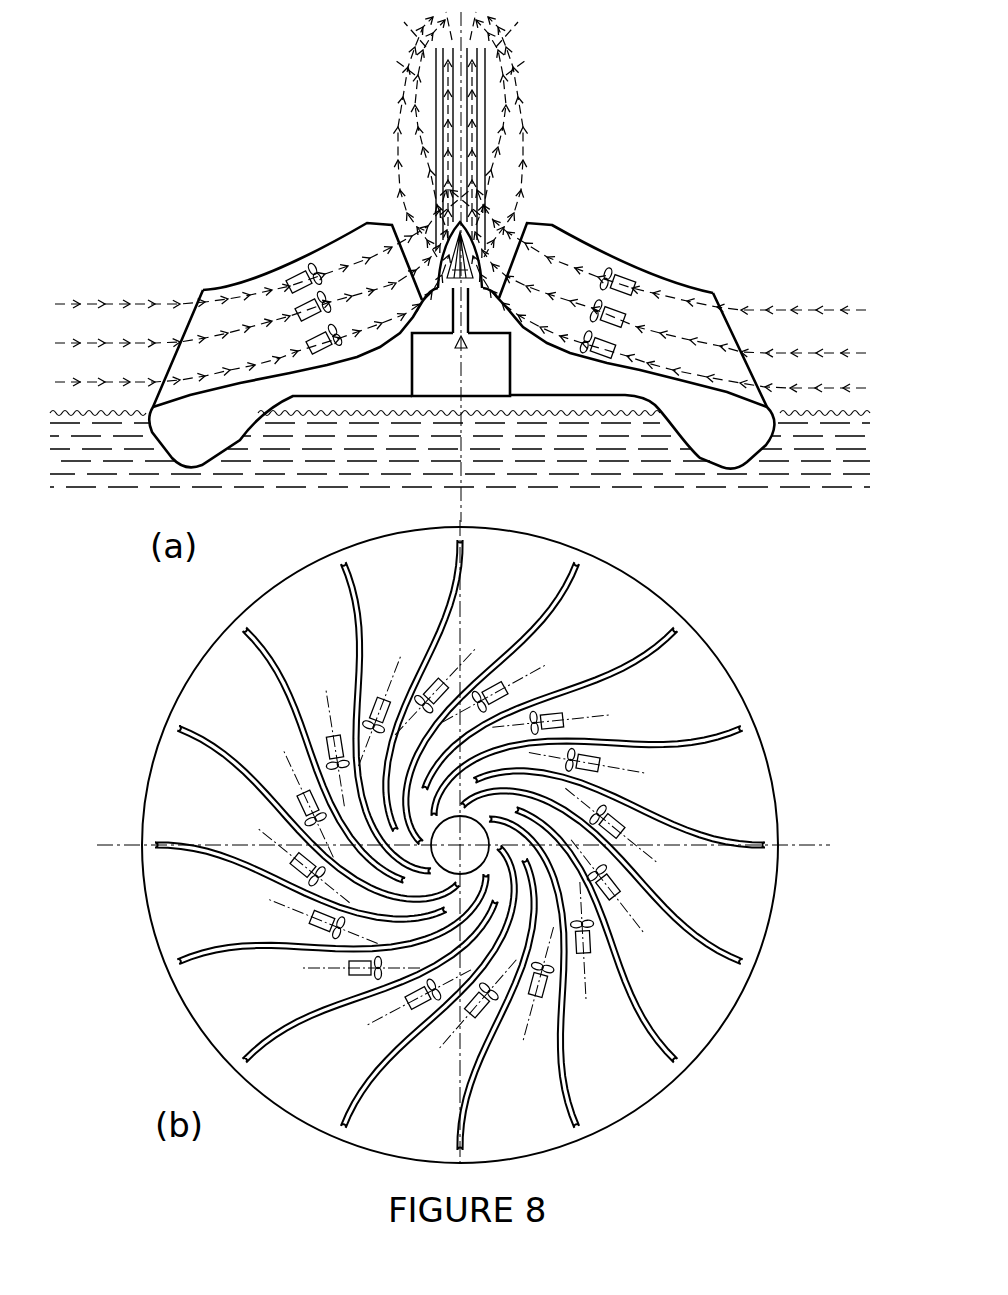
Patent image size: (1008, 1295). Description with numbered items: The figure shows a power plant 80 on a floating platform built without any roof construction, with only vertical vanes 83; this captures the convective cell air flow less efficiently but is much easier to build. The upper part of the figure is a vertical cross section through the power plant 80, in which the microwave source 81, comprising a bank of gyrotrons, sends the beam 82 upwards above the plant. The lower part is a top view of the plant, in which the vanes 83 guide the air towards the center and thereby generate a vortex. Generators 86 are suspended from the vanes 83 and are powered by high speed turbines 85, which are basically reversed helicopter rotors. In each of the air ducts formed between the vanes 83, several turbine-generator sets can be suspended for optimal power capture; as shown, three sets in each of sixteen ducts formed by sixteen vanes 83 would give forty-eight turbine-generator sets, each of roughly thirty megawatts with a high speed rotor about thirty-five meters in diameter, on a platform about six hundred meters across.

The power plant 80 is at (307, 247).
The microwave source 81 is at (488, 374).
The beam 82 is at (475, 139).
The vertical vanes 83 is at (668, 295).
The high speed turbines 85 is at (618, 832).
The generators 86 is at (626, 834).